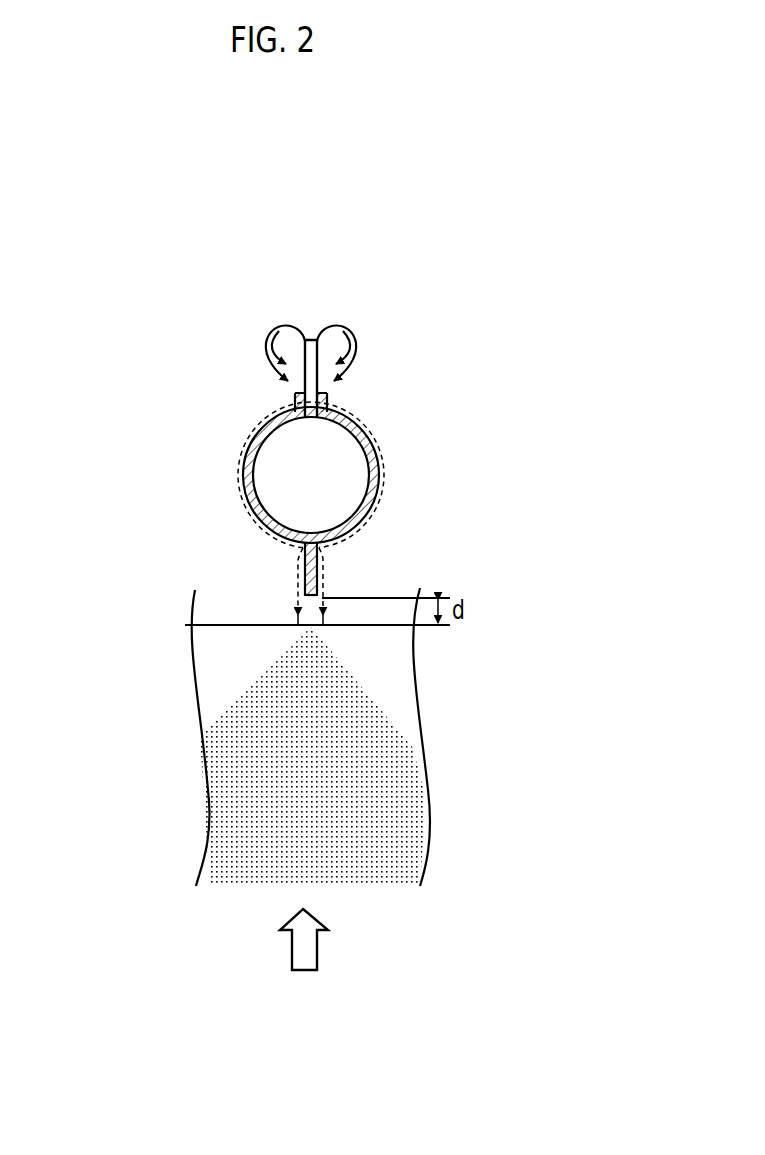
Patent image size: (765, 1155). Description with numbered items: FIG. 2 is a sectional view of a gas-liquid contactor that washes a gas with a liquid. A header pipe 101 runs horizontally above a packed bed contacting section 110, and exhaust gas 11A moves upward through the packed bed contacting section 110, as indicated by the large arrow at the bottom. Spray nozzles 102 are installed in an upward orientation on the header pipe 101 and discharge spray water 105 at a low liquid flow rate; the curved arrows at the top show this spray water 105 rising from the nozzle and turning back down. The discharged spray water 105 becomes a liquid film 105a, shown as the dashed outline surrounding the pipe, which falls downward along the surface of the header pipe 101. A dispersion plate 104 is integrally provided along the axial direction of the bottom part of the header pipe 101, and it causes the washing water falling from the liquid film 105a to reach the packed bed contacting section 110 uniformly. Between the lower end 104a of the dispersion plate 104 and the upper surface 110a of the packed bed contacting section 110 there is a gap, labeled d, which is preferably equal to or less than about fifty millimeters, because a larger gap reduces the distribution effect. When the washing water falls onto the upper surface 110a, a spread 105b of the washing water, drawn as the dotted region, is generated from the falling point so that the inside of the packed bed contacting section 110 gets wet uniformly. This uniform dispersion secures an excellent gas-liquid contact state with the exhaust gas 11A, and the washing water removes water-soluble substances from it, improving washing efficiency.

The header pipe 101 is at (250, 441).
The spray nozzle 102 is at (318, 387).
The dispersion plate 104 is at (305, 576).
The lower end 104a is at (305, 596).
The spray water 105 is at (352, 345).
The liquid film 105a is at (323, 575).
The spread of the washing water 105b is at (397, 695).
The packed bed contacting section 110 is at (214, 680).
The upper surface 110a is at (205, 625).
The exhaust gas 11A is at (317, 950).